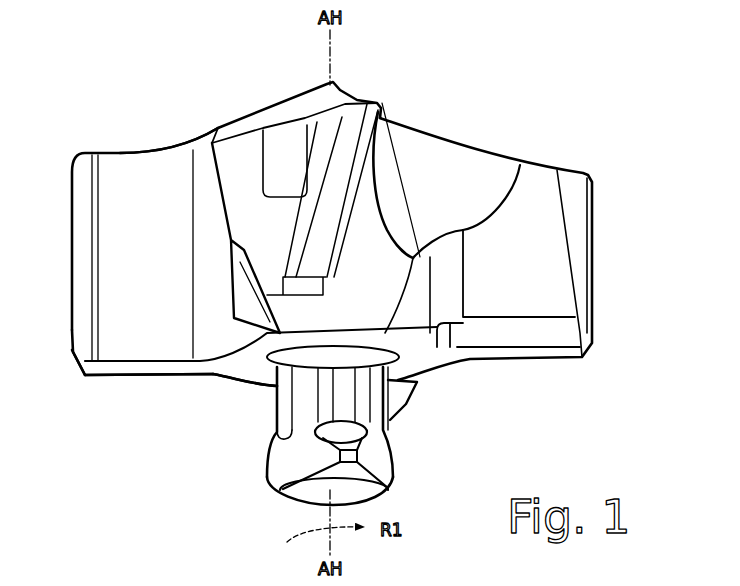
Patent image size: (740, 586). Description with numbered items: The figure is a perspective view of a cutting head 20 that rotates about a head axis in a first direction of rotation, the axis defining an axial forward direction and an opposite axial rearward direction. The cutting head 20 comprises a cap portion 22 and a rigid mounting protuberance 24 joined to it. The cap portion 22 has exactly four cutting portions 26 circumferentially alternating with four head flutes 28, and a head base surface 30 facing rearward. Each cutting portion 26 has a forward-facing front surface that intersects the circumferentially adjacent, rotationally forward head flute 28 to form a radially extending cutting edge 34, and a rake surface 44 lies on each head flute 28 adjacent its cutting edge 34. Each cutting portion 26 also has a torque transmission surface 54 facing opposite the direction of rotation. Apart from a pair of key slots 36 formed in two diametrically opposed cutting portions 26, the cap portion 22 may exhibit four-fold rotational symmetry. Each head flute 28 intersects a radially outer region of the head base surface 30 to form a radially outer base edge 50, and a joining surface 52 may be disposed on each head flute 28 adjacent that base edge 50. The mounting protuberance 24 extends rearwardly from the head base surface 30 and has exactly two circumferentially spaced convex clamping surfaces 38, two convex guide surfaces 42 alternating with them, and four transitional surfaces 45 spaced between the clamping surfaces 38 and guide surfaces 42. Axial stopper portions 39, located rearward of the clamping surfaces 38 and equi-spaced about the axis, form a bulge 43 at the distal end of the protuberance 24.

The cutting head 20 is at (430, 107).
The cap portion 22 is at (597, 262).
The rigid mounting protuberance 24 is at (392, 392).
The cutting portion 26 is at (182, 160).
The head flute 28 is at (157, 280).
The head base surface 30 is at (238, 370).
The cutting edge 34 is at (135, 153).
The key slot 36 is at (288, 152).
The convex clamping surface 38 is at (345, 400).
The axial stopper portion 39 is at (364, 457).
The convex guide surface 42 is at (273, 418).
The bulge 43 is at (262, 490).
The rake surface 44 is at (140, 175).
The transitional surface 45 is at (310, 388).
The radially outer base edge 50 is at (165, 363).
The joining surface 52 is at (85, 376).
The torque transmission surface 54 is at (529, 271).